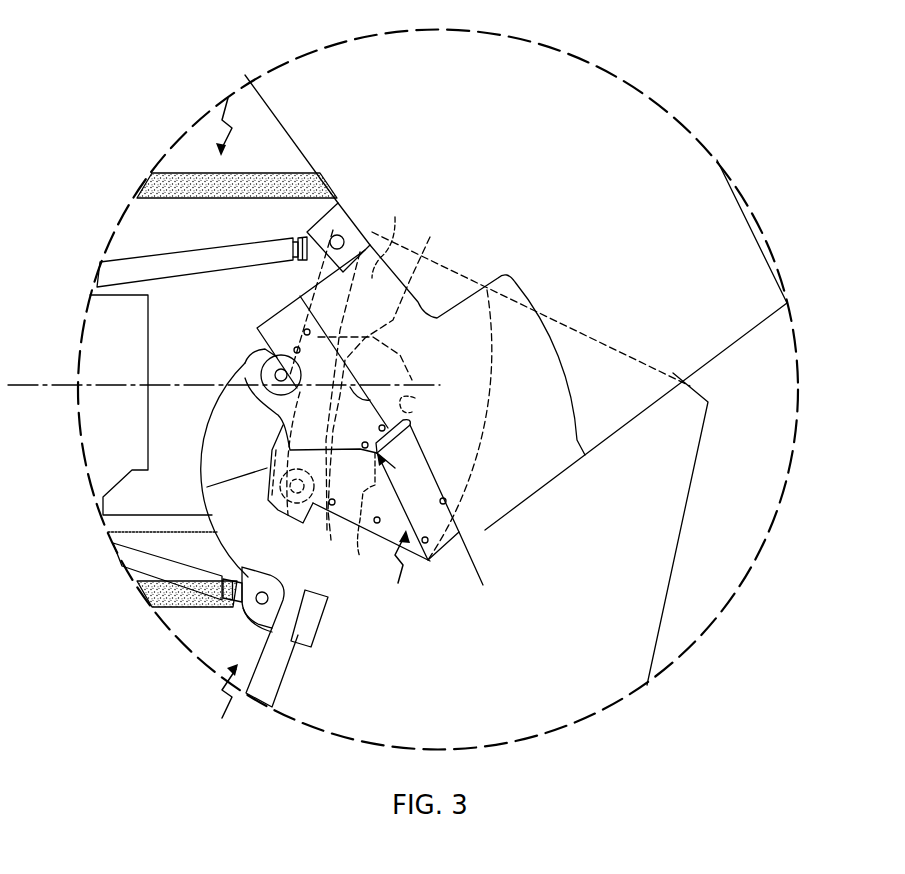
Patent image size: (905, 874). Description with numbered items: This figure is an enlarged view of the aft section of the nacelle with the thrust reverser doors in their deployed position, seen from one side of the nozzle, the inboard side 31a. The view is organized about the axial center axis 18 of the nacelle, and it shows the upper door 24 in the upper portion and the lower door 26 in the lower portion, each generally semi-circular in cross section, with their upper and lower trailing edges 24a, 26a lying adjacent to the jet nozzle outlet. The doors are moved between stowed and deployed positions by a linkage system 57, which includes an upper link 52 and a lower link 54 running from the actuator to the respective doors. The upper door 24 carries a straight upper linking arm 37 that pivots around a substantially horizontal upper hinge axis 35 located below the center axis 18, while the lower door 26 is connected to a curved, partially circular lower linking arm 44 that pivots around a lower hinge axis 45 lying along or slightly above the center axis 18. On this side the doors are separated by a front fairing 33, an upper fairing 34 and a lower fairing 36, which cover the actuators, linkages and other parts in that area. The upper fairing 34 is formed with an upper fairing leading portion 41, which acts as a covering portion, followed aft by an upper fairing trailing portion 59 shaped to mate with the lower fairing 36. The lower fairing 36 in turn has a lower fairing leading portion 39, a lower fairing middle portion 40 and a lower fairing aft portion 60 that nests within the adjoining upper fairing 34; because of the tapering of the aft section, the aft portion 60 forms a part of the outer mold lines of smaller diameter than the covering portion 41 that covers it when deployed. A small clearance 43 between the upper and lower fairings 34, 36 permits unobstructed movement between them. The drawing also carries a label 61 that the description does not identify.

The center axis 18 is at (22, 383).
The upper door 24 is at (600, 88).
The upper trailing edge 24a is at (740, 340).
The lower door 26 is at (547, 713).
The lower trailing edge 26a is at (697, 387).
The inboard side 31a is at (260, 661).
The front fairing 33 is at (103, 337).
The upper fairing 34 is at (357, 403).
The upper hinge axis 35 is at (323, 512).
The lower fairing 36 is at (410, 520).
The upper linking arm 37 is at (391, 383).
The lower fairing leading portion 39 is at (292, 455).
The lower fairing middle portion 40 is at (417, 402).
The upper fairing leading portion 41 is at (306, 300).
The clearance 43 is at (450, 530).
The lower linking arm 44 is at (217, 423).
The lower hinge axis 45 is at (281, 369).
The upper link 52 is at (197, 249).
The lower link 54 is at (133, 545).
The linkage system 57 is at (218, 109).
The upper fairing trailing portion 59 is at (327, 520).
The lower fairing aft portion 60 is at (388, 235).
The edge 61 is at (408, 305).